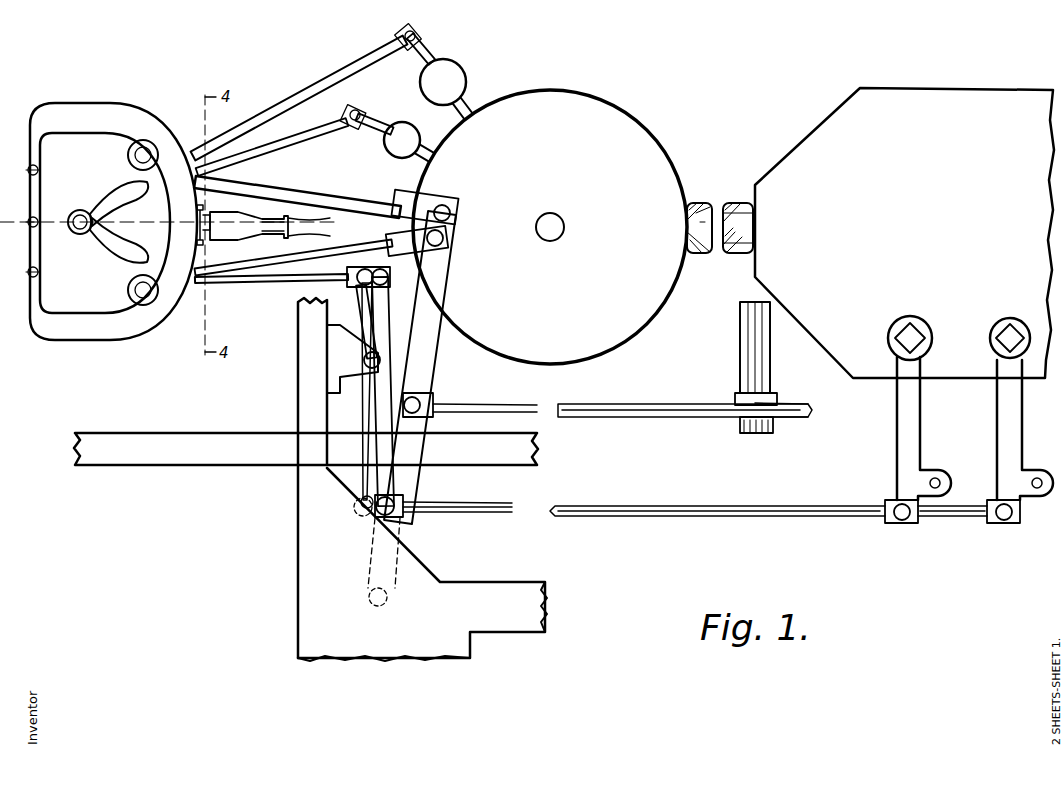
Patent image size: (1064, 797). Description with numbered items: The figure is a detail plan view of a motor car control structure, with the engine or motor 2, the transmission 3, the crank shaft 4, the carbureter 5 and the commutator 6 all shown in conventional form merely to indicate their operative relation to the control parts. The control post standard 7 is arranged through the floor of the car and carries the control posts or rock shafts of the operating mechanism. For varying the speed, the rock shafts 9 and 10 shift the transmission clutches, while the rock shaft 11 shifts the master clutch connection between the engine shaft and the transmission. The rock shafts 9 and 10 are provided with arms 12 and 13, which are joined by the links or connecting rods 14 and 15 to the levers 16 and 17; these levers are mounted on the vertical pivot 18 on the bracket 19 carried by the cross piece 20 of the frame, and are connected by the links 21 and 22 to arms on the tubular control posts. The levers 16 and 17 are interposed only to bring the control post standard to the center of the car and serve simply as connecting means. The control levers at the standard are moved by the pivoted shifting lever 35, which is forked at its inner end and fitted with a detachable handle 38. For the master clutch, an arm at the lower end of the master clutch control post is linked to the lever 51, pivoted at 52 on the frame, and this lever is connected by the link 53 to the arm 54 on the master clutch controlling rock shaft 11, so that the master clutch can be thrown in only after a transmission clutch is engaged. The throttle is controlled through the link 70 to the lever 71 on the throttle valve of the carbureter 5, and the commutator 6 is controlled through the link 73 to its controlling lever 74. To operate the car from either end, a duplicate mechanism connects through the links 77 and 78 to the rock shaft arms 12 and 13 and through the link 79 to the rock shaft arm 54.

The engine or motor 2 is at (628, 126).
The transmission 3 is at (905, 93).
The crank shaft 4 is at (743, 205).
The carbureter 5 is at (450, 75).
The commutator 6 is at (414, 126).
The control post standard 7 is at (134, 172).
The rock shaft 9 is at (996, 338).
The rock shaft 10 is at (895, 338).
The rock shaft 11 is at (762, 378).
The arm 12 is at (1000, 425).
The arm 13 is at (897, 452).
The link or connecting rod 14 is at (968, 514).
The link or connecting rod 15 is at (818, 510).
The lever 16 is at (378, 292).
The lever 17 is at (360, 310).
The vertical pivot 18 is at (376, 327).
The bracket 19 is at (340, 362).
The cross piece 20 is at (305, 402).
The link 21 is at (388, 270).
The link 22 is at (238, 276).
The shifting lever 35 is at (208, 232).
The detachable handle 38 is at (264, 219).
The lever 51 is at (428, 360).
The pivot 52 is at (370, 596).
The link 53 is at (603, 405).
The arm 54 is at (740, 418).
The link 70 is at (290, 110).
The lever 71 is at (420, 50).
The link 73 is at (322, 134).
The controlling lever 74 is at (390, 118).
The link 77 is at (938, 478).
The link 78 is at (1040, 490).
The link 79 is at (803, 413).